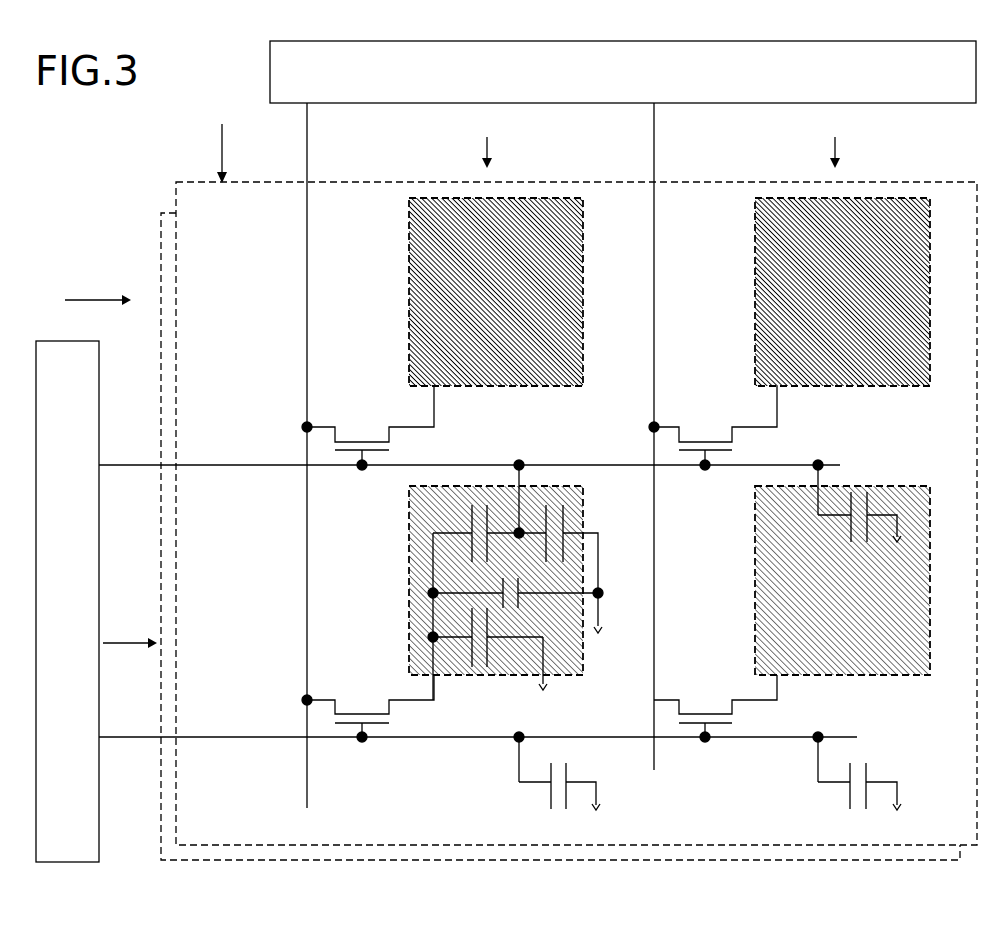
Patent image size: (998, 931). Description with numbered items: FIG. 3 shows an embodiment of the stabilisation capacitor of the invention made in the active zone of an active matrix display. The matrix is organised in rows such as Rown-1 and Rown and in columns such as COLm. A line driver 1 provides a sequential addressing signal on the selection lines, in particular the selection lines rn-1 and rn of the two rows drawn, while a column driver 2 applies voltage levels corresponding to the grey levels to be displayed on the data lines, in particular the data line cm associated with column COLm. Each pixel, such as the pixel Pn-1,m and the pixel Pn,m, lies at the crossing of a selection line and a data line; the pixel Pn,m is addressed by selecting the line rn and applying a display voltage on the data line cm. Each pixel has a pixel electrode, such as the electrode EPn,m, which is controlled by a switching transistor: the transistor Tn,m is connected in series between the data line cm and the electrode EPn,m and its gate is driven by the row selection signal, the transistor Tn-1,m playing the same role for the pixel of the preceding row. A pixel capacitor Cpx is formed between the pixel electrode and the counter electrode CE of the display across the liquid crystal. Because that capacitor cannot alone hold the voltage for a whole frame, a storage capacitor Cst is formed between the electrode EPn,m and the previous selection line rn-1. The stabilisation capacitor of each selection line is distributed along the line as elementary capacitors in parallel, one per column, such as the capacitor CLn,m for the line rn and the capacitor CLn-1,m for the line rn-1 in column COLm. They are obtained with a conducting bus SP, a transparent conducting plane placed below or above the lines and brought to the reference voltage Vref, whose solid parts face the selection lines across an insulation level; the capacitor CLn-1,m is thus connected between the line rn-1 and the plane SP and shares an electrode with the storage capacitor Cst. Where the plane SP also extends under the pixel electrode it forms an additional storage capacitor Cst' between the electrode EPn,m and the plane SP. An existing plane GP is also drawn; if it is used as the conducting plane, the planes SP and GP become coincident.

The line driver 1 is at (72, 358).
The column driver 2 is at (270, 62).
The conducting plane SP is at (203, 195).
The GP plane GP is at (161, 248).
The reference voltage Vref is at (229, 135).
The row n-1 Rown-1 is at (103, 287).
The row n Rown is at (130, 630).
The data line cm is at (307, 163).
The column m COLm is at (490, 138).
The selection line rn-1 is at (130, 465).
The selection line rn is at (140, 737).
The pixel Pn-1,m is at (408, 330).
The pixel Pn,m is at (422, 540).
The transistor Tn-1,m is at (368, 428).
The transistor Tn,m is at (368, 708).
The pixel electrode EPn,m is at (420, 630).
The storage capacitor Cst is at (476, 544).
The elementary stabilisation capacitor CLn-1,m is at (568, 557).
The additional storage capacitor Cst' is at (515, 604).
The pixel capacitor Cpx is at (488, 641).
The counter electrode CE is at (543, 677).
The elementary stabilisation capacitor CLn,m is at (564, 787).